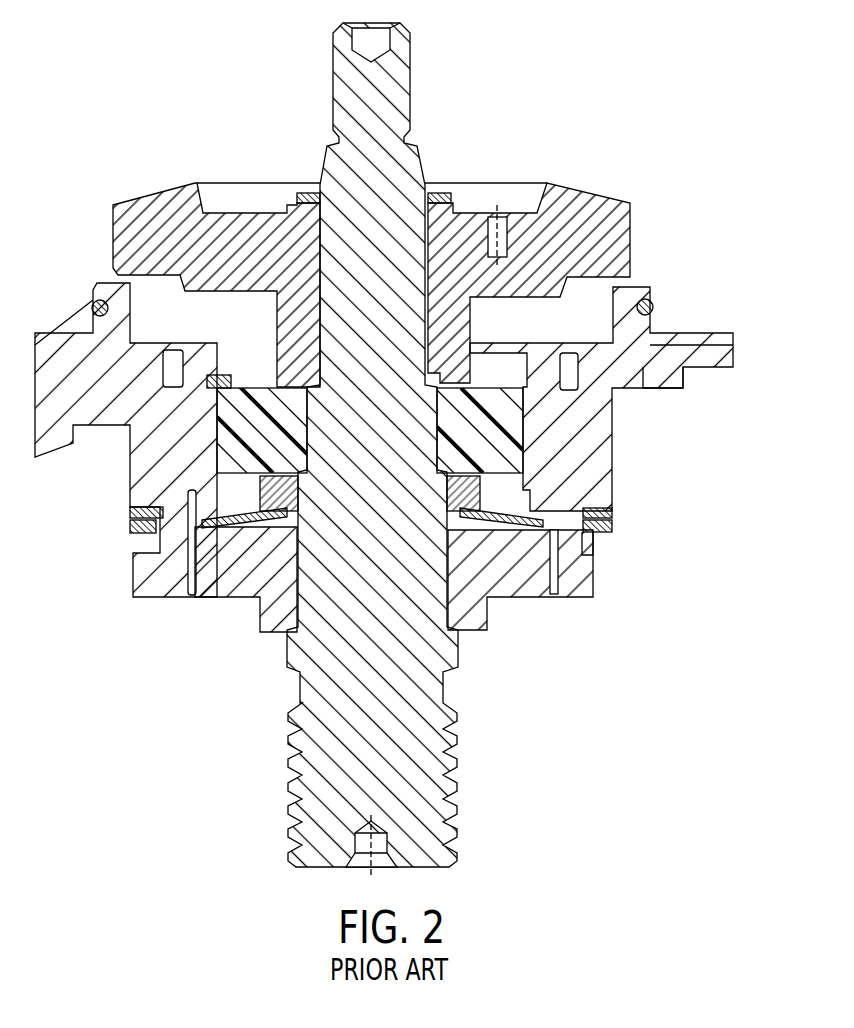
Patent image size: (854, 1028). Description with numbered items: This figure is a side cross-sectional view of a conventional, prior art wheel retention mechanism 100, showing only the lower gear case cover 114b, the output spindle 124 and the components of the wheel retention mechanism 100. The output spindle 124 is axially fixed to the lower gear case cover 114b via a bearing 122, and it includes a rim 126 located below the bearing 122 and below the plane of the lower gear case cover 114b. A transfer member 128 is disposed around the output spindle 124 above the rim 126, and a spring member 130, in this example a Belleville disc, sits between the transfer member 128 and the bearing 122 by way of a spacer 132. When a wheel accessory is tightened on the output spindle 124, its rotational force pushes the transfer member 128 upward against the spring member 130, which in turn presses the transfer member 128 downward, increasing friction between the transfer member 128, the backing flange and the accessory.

The wheel retention mechanism 100 is at (115, 715).
The lower gear case cover 114b is at (602, 467).
The bearing 122 is at (513, 460).
The output spindle 124 is at (413, 163).
The rim 126 is at (452, 660).
The transfer member 128 is at (238, 583).
The spring member 130 is at (543, 513).
The spacer 132 is at (283, 493).